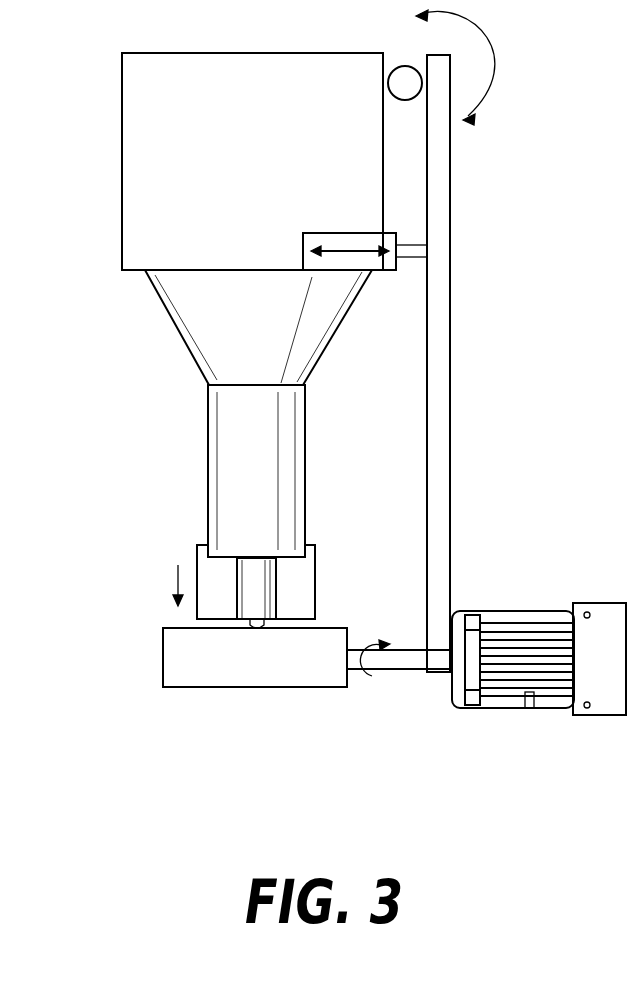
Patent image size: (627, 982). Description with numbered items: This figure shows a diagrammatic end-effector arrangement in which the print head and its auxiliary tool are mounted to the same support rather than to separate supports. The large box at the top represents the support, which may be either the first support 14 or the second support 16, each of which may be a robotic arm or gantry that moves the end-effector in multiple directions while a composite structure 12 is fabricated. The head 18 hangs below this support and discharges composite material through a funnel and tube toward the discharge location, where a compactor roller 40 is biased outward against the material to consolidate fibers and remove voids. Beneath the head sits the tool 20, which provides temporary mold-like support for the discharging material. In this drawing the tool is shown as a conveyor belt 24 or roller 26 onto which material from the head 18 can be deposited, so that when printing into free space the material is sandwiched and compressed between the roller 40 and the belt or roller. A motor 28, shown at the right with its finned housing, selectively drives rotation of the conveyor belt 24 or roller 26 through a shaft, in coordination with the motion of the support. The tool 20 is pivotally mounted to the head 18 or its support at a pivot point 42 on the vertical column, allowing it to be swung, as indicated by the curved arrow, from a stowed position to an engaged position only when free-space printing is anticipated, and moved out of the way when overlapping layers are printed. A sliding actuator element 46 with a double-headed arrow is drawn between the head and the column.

The composite structure 12 is at (252, 623).
The first support 14 is at (294, 41).
The second support 16 is at (252, 161).
The first end-effector (head) 18 is at (92, 181).
The second end-effector (tool) 20 is at (456, 785).
The conveyor belt 24 is at (191, 688).
The roller 26 is at (255, 657).
The motor 28 is at (615, 718).
The roller (of compactor) 40 is at (300, 597).
The pivot point 42 is at (391, 83).
The slide actuator 46 is at (350, 233).